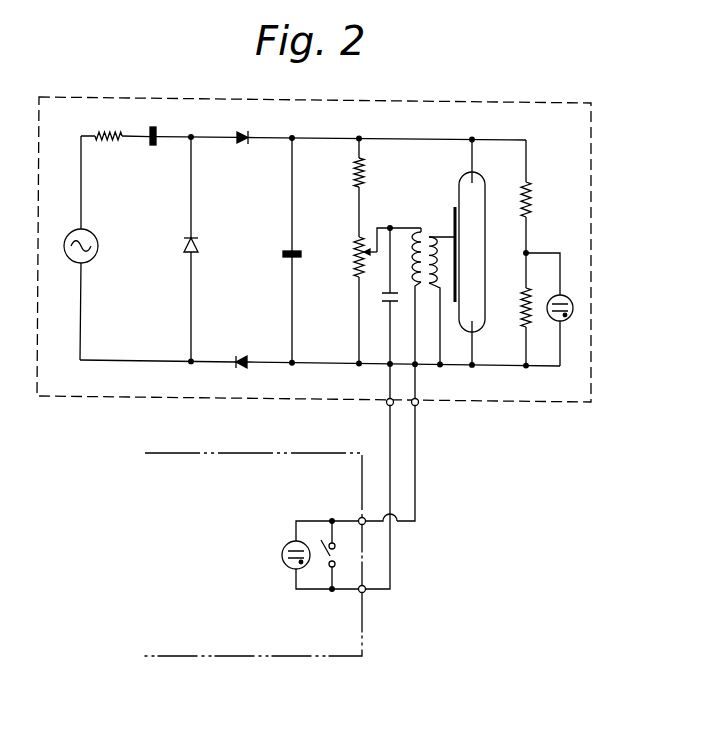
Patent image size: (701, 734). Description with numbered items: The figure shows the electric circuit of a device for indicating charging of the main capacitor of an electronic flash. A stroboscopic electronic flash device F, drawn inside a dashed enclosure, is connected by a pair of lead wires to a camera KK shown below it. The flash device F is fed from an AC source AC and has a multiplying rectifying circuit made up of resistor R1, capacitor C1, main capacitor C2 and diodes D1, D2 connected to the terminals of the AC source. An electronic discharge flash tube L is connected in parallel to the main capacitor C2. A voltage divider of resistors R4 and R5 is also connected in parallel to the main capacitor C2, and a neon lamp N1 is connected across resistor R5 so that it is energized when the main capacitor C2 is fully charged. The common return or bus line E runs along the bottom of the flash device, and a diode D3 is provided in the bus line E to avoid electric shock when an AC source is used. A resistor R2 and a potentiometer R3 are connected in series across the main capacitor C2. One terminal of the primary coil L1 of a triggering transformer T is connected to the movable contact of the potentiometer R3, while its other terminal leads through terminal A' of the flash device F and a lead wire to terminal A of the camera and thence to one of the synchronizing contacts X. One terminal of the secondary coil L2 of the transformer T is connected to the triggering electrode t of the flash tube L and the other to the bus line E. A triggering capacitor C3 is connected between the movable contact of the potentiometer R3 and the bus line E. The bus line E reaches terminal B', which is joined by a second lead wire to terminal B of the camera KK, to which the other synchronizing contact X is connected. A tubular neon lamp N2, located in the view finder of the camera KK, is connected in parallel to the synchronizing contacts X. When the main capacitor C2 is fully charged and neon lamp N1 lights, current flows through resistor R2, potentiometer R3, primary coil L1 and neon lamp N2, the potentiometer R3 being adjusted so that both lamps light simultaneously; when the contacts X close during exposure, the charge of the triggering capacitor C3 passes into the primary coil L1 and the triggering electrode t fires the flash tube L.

The stroboscopic electronic flash device F is at (487, 101).
The AC source AC is at (97, 246).
The resistor R1 is at (108, 122).
The capacitor C1 is at (160, 125).
The diode D1 is at (247, 154).
The diode D2 is at (205, 249).
The diode D3 is at (240, 347).
The main capacitor C2 is at (278, 250).
The resistor R2 is at (346, 172).
The potentiometer R3 is at (353, 257).
The triggering capacitor C3 is at (382, 296).
The triggering transformer T is at (456, 279).
The primary coil L1 is at (410, 296).
The secondary coil L2 is at (430, 284).
The triggering electrode t is at (453, 206).
The electronic discharge flash tube L is at (485, 188).
The resistor R4 is at (539, 201).
The resistor R5 is at (512, 307).
The neon lamp N1 is at (567, 323).
The bus line E is at (333, 363).
The terminal A' is at (417, 442).
The terminal B' is at (380, 476).
The terminal A is at (370, 509).
The terminal B is at (369, 602).
The tubular neon lamp N2 is at (286, 568).
The synchronizing contacts X is at (335, 552).
The camera KK is at (363, 625).